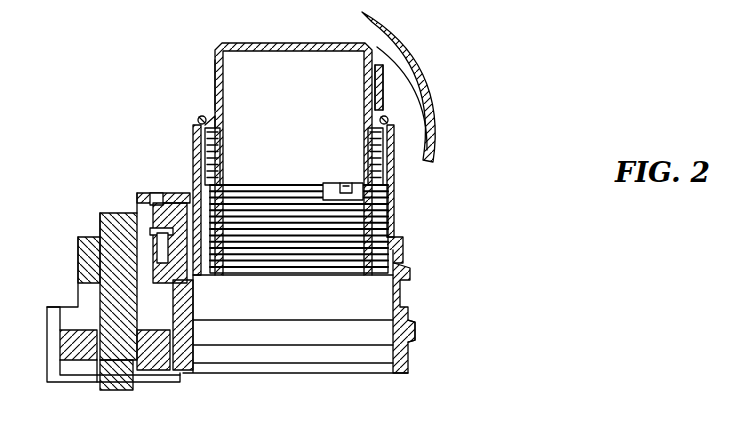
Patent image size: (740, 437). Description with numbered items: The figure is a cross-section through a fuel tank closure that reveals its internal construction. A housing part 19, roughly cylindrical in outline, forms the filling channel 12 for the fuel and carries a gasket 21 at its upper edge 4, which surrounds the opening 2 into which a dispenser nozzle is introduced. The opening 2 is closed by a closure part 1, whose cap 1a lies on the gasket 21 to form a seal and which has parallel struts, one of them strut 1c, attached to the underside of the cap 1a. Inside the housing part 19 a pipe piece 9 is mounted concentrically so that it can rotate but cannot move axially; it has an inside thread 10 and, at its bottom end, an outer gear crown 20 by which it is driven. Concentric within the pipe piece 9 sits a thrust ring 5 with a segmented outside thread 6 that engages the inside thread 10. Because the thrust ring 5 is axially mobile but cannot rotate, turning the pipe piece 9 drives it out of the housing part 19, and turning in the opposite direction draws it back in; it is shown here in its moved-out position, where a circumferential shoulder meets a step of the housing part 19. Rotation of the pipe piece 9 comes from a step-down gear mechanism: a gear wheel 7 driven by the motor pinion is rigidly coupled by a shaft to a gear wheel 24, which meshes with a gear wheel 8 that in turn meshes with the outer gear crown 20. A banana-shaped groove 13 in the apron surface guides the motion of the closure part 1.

The closure part 1 is at (499, 47).
The cap 1a is at (437, 113).
The strut 1c is at (383, 62).
The opening 2 is at (300, 46).
The edge 4 is at (212, 114).
The thrust ring 5 is at (215, 80).
The outside thread 6 is at (218, 152).
The gear wheel 7 is at (115, 352).
The gear wheel 8 is at (133, 232).
The pipe piece 9 is at (382, 208).
The inside thread 10 is at (352, 258).
The filling channel 12 is at (315, 310).
The groove 13 is at (337, 185).
The housing part 19 is at (410, 332).
The outer gear crown 20 is at (396, 248).
The gasket 21 is at (198, 120).
The gear wheel 24 is at (112, 277).